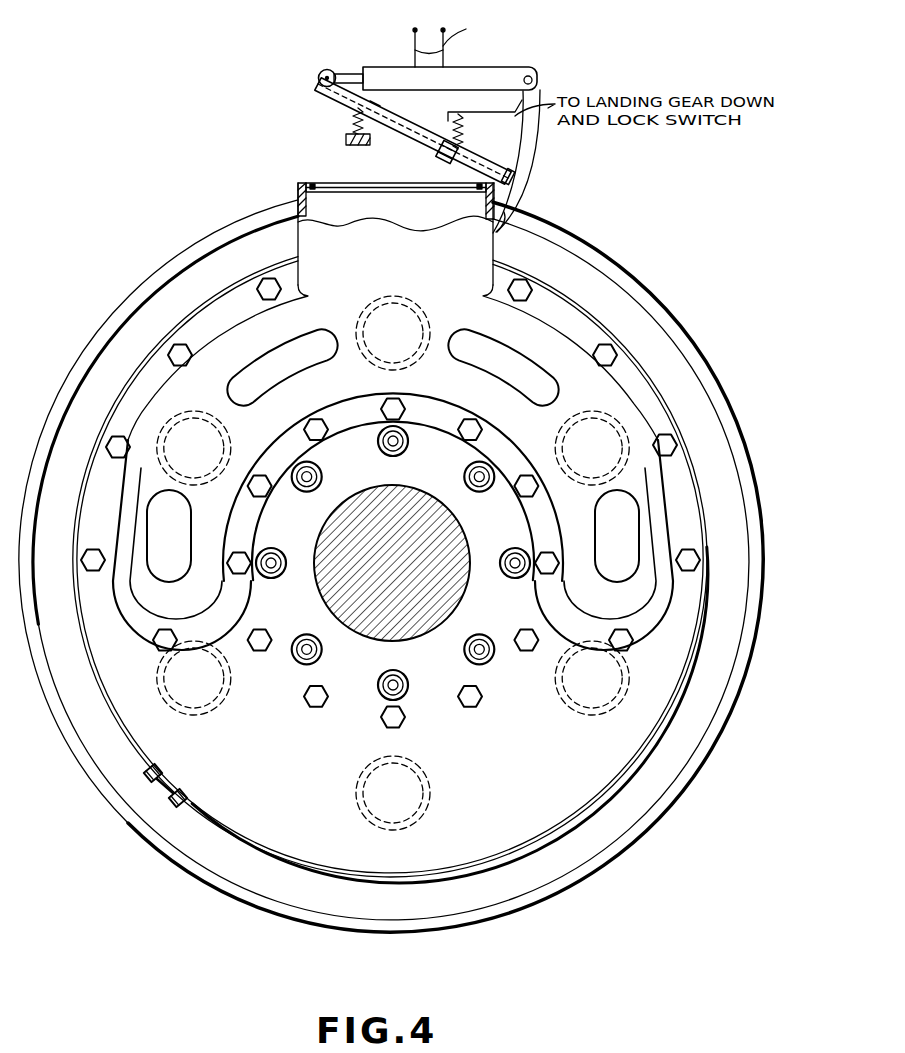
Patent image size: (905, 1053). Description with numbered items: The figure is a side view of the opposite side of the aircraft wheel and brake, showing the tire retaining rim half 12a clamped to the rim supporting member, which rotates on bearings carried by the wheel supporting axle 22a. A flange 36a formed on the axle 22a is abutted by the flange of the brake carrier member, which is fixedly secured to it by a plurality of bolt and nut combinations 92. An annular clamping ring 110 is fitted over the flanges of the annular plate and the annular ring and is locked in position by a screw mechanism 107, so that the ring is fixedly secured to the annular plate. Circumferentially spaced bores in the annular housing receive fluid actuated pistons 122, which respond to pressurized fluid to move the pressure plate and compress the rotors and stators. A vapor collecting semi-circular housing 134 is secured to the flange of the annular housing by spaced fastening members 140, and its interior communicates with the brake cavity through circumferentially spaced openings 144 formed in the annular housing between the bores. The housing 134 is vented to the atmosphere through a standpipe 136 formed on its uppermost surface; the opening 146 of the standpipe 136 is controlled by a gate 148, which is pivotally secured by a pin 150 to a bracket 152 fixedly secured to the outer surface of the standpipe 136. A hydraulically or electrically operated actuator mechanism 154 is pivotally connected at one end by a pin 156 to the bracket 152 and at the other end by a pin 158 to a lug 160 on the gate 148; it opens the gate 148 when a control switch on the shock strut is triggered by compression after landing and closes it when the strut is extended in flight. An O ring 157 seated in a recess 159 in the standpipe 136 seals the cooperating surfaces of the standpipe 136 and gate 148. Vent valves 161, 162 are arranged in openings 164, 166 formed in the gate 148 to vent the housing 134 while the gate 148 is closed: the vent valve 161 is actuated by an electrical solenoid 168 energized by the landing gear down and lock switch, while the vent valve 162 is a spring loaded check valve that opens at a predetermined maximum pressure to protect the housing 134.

The tire retaining rim half 12a is at (688, 374).
The vapor collecting semi-circular housing 134 is at (610, 344).
The flange 36a is at (492, 783).
The annular clamping ring 110 is at (245, 848).
The screw mechanism 107 is at (160, 784).
The fastening members 140 is at (470, 432).
The openings 144 is at (548, 381).
The bolt and nut combinations 92 is at (480, 482).
The wheel supporting axle 22a is at (422, 625).
The fluid actuated pistons 122 is at (568, 697).
The standpipe 136 is at (493, 259).
The O ring 157 is at (296, 190).
The recess 159 is at (482, 193).
The opening 146 is at (342, 183).
The actuator mechanism 154 is at (483, 75).
The pin 156 is at (536, 82).
The bracket 152 is at (528, 153).
The pin 150 is at (519, 183).
The gate 148 is at (312, 95).
The vent valve 162 is at (378, 108).
The pin 158 is at (331, 71).
The lug 160 is at (319, 79).
The opening 166 is at (352, 112).
The electrical solenoid 168 is at (441, 118).
The opening 164 is at (463, 127).
The vent valve 161 is at (442, 161).